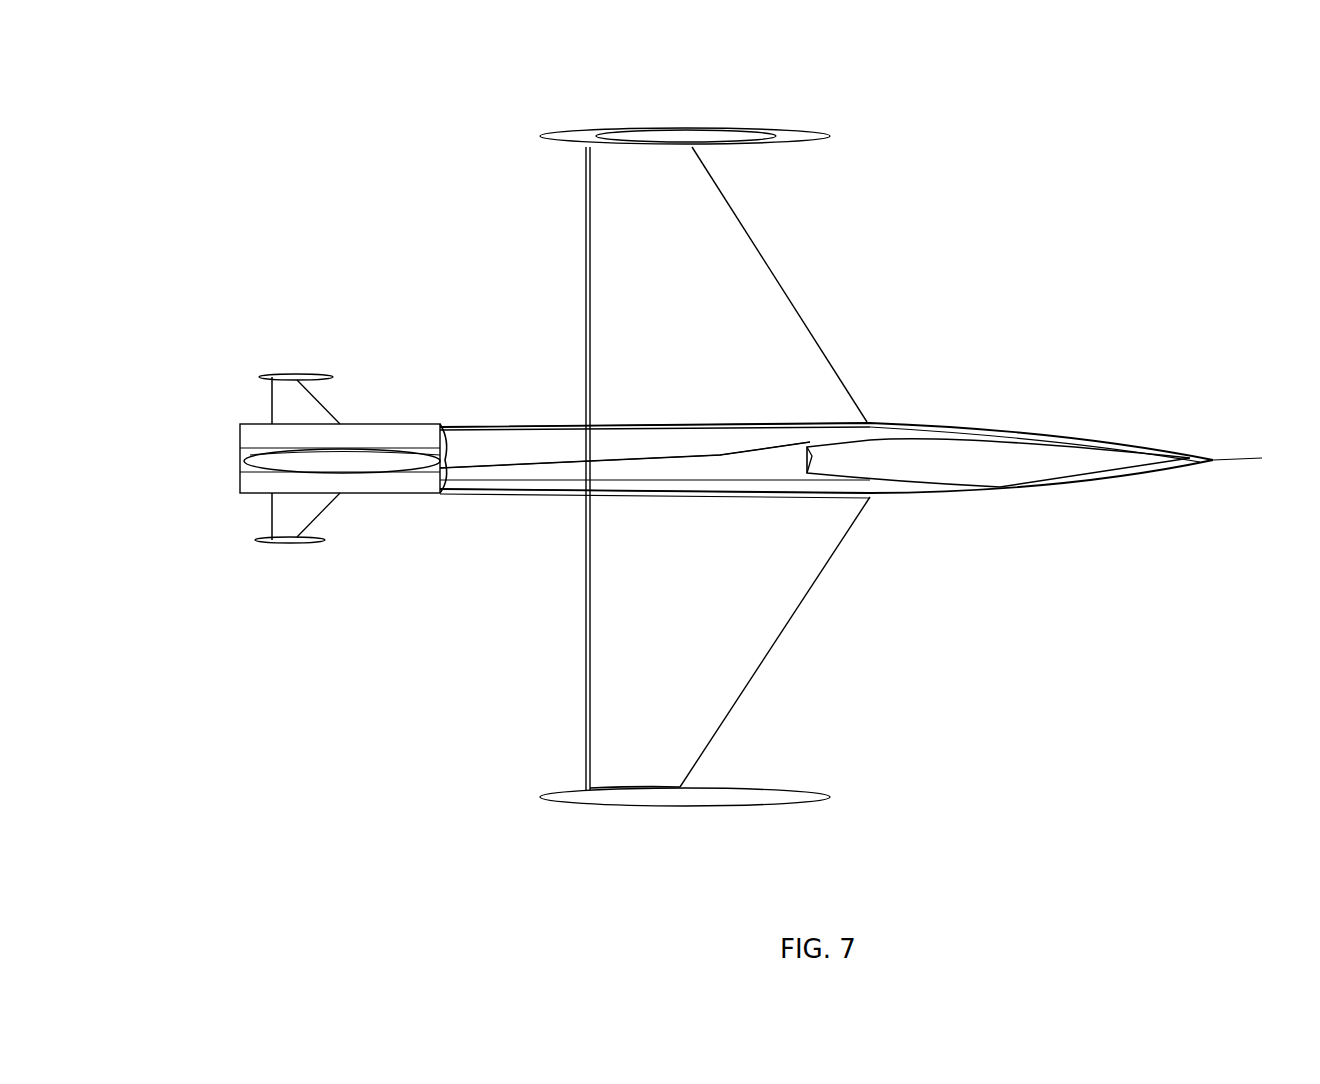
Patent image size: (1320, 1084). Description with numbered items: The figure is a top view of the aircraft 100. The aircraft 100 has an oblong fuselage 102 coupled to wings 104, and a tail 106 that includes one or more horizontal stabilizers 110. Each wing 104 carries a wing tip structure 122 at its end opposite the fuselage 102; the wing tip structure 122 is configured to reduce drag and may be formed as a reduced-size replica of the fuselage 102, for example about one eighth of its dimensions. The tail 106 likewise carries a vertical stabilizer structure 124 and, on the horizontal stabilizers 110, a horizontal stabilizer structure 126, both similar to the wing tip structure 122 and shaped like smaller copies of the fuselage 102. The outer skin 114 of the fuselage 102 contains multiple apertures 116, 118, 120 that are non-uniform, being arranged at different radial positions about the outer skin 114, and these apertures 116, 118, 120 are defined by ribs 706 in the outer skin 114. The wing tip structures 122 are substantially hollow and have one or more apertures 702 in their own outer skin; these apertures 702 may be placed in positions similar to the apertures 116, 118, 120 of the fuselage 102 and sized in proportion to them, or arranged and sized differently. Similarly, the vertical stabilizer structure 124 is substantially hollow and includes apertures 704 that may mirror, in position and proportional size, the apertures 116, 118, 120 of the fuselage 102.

The aircraft 100 is at (992, 298).
The fuselage 102 is at (1160, 478).
The wing 104 is at (623, 255).
The tail 106 is at (240, 483).
The horizontal stabilizer 110 is at (265, 400).
The outer skin 114 is at (705, 465).
The aperture 116 is at (960, 455).
The aperture 118 is at (477, 487).
The aperture 120 is at (500, 437).
The wing tip structure 122 is at (583, 133).
The vertical stabilizer structure 124 is at (240, 457).
The horizontal stabilizer structure 126 is at (262, 379).
The aperture 702 is at (760, 134).
The aperture 704 is at (363, 462).
The rib 706 is at (810, 441).